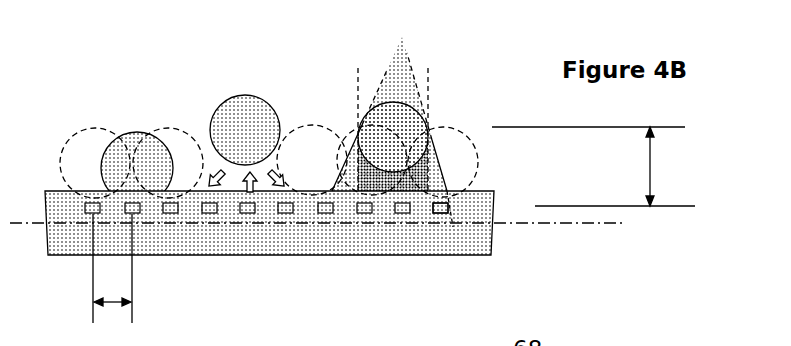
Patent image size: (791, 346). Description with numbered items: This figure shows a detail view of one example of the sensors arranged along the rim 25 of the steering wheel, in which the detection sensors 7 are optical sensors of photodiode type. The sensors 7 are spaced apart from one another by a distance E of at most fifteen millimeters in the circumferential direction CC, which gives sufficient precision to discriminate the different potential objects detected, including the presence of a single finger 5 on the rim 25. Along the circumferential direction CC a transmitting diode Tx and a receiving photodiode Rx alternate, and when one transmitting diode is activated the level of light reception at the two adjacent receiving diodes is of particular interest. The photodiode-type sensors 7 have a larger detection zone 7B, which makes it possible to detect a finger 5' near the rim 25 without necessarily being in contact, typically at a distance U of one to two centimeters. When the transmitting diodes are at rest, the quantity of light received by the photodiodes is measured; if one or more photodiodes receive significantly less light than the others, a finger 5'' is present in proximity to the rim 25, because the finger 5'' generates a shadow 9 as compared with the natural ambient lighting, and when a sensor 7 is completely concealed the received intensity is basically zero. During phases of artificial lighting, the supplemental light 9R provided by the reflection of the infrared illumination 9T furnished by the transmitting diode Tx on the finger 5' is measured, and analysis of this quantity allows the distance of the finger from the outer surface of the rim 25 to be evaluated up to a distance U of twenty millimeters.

The finger 5 is at (120, 145).
The finger near the rim 5' is at (234, 112).
The finger in proximity to the rim 5'' is at (370, 114).
The detection sensor 7 is at (447, 210).
The detection zone 7B is at (463, 130).
The shadow 9 is at (430, 180).
The supplemental light 9R is at (212, 177).
The infrared illumination 9T is at (257, 193).
The rim 25 is at (186, 260).
The distance between sensors E is at (112, 277).
The detection distance U is at (593, 166).
The circumferential direction CC is at (596, 242).